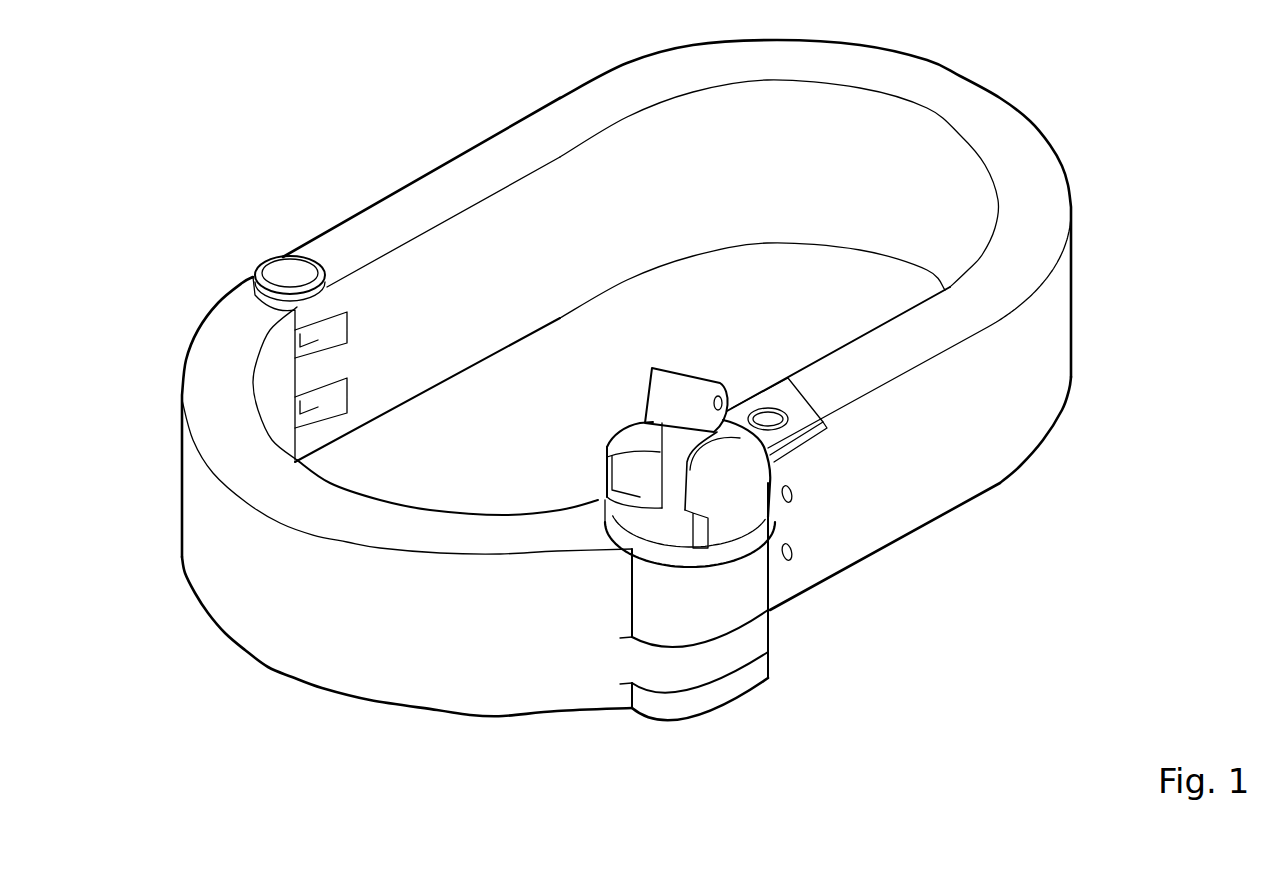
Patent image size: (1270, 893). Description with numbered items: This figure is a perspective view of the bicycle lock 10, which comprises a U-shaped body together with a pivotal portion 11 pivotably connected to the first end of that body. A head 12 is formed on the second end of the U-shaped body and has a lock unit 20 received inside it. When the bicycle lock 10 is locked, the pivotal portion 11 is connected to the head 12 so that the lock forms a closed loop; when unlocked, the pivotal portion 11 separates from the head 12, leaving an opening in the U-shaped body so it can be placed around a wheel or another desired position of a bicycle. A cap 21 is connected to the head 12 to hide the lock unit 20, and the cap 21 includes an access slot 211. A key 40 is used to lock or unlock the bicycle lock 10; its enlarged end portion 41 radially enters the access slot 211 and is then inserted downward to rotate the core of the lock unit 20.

The bicycle lock 10 is at (1056, 495).
The pivotal portion 11 is at (282, 648).
The head 12 is at (715, 622).
The lock unit 20 is at (636, 459).
The cap 21 is at (637, 427).
The access slot 211 is at (612, 456).
The key 40 is at (697, 362).
The end portion 41 is at (643, 507).